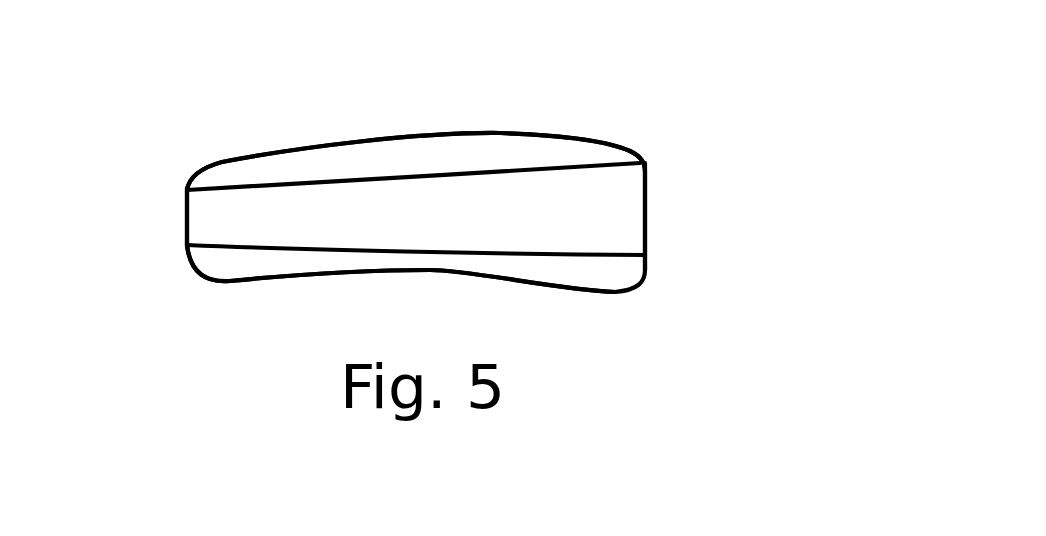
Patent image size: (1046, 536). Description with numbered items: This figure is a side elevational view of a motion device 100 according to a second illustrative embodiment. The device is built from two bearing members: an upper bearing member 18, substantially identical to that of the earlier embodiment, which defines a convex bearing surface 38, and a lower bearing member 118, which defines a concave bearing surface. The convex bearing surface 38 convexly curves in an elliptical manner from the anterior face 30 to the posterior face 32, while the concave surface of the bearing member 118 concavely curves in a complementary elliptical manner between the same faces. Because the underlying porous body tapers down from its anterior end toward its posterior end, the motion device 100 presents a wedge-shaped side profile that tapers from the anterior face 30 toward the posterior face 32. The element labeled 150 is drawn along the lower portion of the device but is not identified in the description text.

The motion device 100 is at (459, 94).
The convex bearing surface 38 is at (477, 122).
The bearing member 18 is at (558, 135).
The posterior face 32 is at (186, 221).
The anterior face 30 is at (647, 203).
The bottom surface 150 is at (323, 265).
The bearing member 118 is at (592, 272).